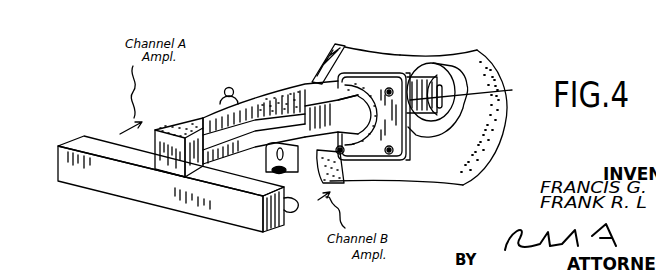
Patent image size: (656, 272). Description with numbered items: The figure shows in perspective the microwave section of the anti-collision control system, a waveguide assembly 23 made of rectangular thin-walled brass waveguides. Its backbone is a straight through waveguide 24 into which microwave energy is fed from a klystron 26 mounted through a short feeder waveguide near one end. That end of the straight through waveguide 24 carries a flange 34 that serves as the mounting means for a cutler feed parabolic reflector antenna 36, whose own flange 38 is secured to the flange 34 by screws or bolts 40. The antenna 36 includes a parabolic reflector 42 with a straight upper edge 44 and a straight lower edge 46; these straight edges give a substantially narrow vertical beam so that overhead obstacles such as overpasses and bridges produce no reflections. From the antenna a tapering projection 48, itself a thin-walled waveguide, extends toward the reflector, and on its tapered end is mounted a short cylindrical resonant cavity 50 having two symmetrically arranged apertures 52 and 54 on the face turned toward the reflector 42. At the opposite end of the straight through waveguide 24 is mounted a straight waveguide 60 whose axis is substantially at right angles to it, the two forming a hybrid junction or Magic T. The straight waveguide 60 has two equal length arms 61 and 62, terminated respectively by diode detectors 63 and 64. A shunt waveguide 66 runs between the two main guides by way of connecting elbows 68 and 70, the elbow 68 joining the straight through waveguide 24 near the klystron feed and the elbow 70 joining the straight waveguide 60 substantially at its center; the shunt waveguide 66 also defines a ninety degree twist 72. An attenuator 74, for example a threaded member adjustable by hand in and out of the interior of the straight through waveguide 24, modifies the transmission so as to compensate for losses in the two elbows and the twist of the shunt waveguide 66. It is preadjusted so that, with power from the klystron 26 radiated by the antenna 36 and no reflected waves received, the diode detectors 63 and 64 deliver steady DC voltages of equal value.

The waveguide assembly 23 is at (260, 86).
The straight through waveguide 24 is at (254, 145).
The klystron 26 is at (224, 90).
The flange 34 is at (405, 152).
The cutler feed parabolic reflector antenna 36 is at (323, 55).
The flange 38 is at (410, 140).
The screws or bolts 40 is at (389, 88).
The parabolic reflector 42 is at (362, 53).
The straight upper edge 44 is at (405, 55).
The straight lower edge 46 is at (430, 180).
The projection 48 is at (410, 112).
The cylindrical resonant cavity 50 is at (465, 70).
The aperture 52 is at (469, 90).
The aperture 54 is at (447, 63).
The straight waveguide 60 is at (177, 201).
The arm 61 is at (237, 219).
The arm 62 is at (90, 178).
The diode detector 63 is at (114, 143).
The diode detector 64 is at (290, 207).
The shunt waveguide 66 is at (305, 88).
The connecting elbow 68 is at (331, 118).
The connecting elbow 70 is at (172, 163).
The 90° twist 72 is at (190, 120).
The attenuator 74 is at (296, 173).